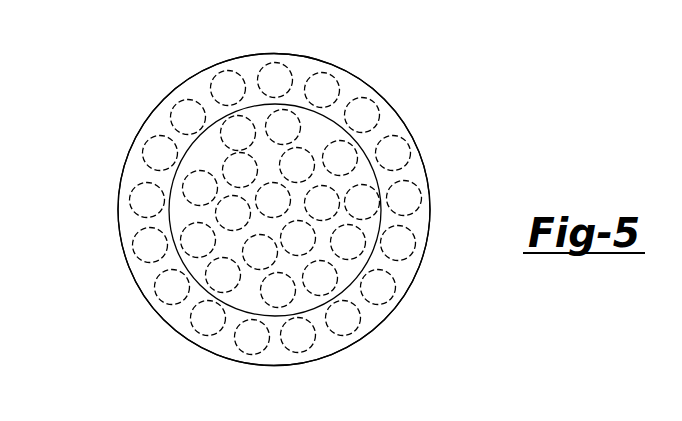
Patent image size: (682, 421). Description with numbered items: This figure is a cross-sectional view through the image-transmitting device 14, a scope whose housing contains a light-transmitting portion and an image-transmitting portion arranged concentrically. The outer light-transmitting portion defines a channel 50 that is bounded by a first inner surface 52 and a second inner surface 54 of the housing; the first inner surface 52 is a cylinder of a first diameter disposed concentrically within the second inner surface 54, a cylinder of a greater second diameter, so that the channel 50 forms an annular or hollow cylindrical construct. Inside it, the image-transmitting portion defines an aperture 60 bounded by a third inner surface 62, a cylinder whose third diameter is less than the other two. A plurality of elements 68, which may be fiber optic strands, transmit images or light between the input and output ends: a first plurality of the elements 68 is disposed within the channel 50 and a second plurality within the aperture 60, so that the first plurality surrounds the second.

The image-transmitting device 14 is at (146, 99).
The channel 50 is at (136, 178).
The first inner surface 52 is at (368, 260).
The second inner surface 54 is at (218, 355).
The aperture 60 is at (317, 130).
The third inner surface 62 is at (181, 287).
The elements 68 is at (367, 185).